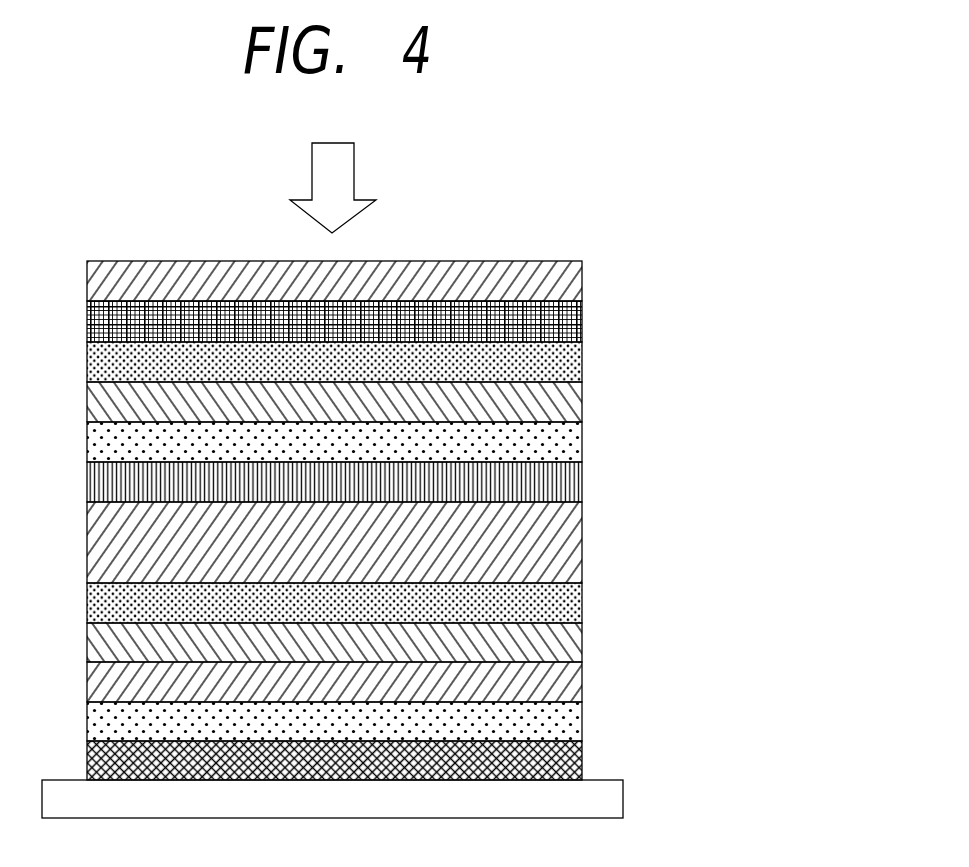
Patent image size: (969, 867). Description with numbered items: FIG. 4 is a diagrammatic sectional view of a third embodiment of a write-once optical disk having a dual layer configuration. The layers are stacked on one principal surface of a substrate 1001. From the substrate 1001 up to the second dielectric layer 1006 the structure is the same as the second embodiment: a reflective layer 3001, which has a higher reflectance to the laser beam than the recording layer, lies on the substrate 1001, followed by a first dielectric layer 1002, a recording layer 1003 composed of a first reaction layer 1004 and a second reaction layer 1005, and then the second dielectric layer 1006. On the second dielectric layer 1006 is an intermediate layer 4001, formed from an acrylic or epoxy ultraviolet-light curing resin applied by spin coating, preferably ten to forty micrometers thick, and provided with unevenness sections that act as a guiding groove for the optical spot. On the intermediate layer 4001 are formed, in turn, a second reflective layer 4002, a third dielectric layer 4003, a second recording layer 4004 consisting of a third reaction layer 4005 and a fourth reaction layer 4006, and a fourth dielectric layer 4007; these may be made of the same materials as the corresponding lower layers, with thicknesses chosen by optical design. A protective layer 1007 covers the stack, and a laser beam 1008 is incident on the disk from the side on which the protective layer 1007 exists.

The substrate 1001 is at (615, 802).
The reflective layer 3001 is at (582, 762).
The first dielectric layer 1002 is at (582, 733).
The recording layer 1003 is at (475, 662).
The first reaction layer 1004 is at (582, 692).
The second reaction layer 1005 is at (582, 637).
The second dielectric layer 1006 is at (582, 612).
The intermediate layer 4001 is at (582, 533).
The second reflective layer 4002 is at (582, 470).
The third dielectric layer 4003 is at (582, 445).
The second recording layer 4004 is at (476, 360).
The third reaction layer 4005 is at (582, 404).
The fourth reaction layer 4006 is at (582, 351).
The fourth dielectric layer 4007 is at (582, 317).
The protective layer 1007 is at (582, 277).
The laser beam 1008 is at (345, 170).